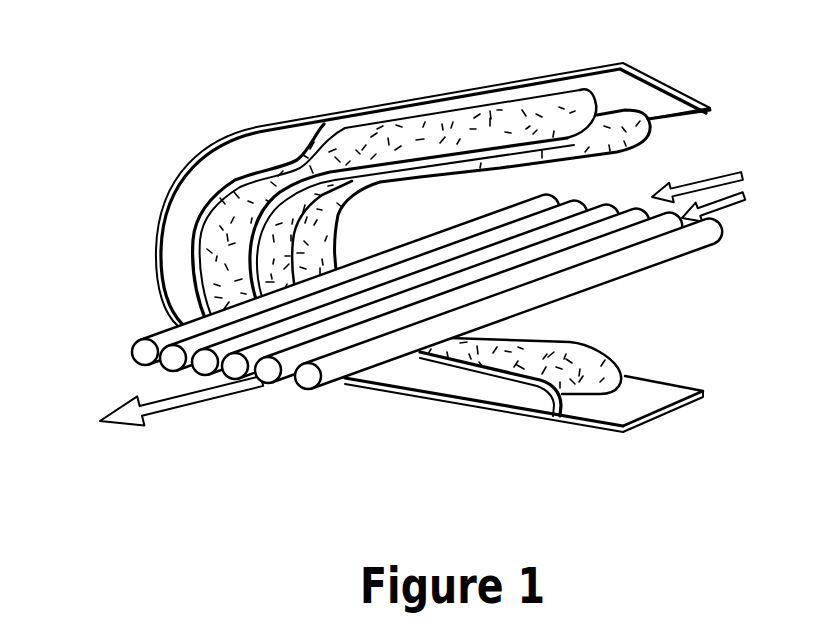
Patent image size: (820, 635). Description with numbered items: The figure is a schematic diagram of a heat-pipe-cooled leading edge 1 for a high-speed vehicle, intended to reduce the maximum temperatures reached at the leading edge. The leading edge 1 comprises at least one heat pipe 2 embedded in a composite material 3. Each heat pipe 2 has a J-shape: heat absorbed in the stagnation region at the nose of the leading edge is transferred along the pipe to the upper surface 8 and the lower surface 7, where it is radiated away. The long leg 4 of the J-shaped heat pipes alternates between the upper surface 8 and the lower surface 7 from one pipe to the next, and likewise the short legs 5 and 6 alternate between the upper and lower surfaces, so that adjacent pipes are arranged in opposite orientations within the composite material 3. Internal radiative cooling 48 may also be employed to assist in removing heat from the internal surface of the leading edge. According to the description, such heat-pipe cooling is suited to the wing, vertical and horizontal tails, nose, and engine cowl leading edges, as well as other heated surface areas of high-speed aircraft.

The heat-pipe-cooled leading edge 1 is at (157, 177).
The heat pipe 2 is at (452, 390).
The composite material 3 is at (560, 405).
The long leg 4 is at (607, 353).
The short leg 5 is at (350, 178).
The short leg 6 is at (260, 147).
The lower surface 7 is at (650, 390).
The upper surface 8 is at (660, 90).
The internal radiative cooling 48 is at (133, 358).